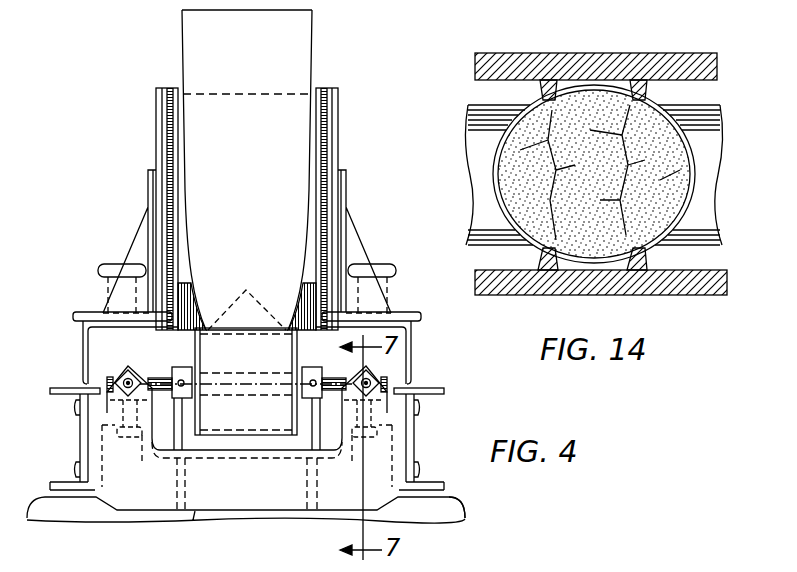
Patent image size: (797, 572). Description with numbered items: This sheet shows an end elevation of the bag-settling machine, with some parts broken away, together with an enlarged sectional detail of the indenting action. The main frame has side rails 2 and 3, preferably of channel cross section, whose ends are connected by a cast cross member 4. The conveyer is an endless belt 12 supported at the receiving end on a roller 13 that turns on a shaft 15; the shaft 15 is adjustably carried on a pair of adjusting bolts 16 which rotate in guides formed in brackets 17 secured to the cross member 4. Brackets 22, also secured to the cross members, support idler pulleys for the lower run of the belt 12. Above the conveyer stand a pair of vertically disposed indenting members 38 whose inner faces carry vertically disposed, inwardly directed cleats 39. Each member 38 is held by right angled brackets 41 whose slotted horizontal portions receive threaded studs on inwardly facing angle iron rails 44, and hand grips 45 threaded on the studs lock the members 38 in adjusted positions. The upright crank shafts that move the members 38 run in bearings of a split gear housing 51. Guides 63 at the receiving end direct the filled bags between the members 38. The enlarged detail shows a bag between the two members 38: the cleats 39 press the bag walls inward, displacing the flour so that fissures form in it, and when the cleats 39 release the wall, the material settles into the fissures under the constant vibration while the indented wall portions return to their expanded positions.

In FIG. 4, the side rail 2 is at (444, 391).
In FIG. 4, the side rail 3 is at (50, 390).
In FIG. 4, the cross member 4 is at (270, 522).
In FIG. 4, the endless belt 12 is at (250, 328).
In FIG. 14, the endless belt 12 is at (716, 203).
In FIG. 4, the roller 13 is at (190, 337).
In FIG. 4, the shaft 15 is at (160, 380).
In FIG. 4, the adjusting bolt 16 is at (116, 378).
In FIG. 4, the bracket 17 is at (107, 407).
In FIG. 4, the bracket 22 is at (152, 443).
In FIG. 14, the vertically disposed member 38 is at (602, 60).
In FIG. 14, the cleat 39 is at (540, 88).
In FIG. 4, the right angled bracket 41 is at (148, 207).
In FIG. 4, the angle iron rail 44 is at (83, 339).
In FIG. 4, the hand grip 45 is at (101, 263).
In FIG. 4, the gear housing 51 is at (461, 512).
In FIG. 4, the guide 63 is at (155, 105).